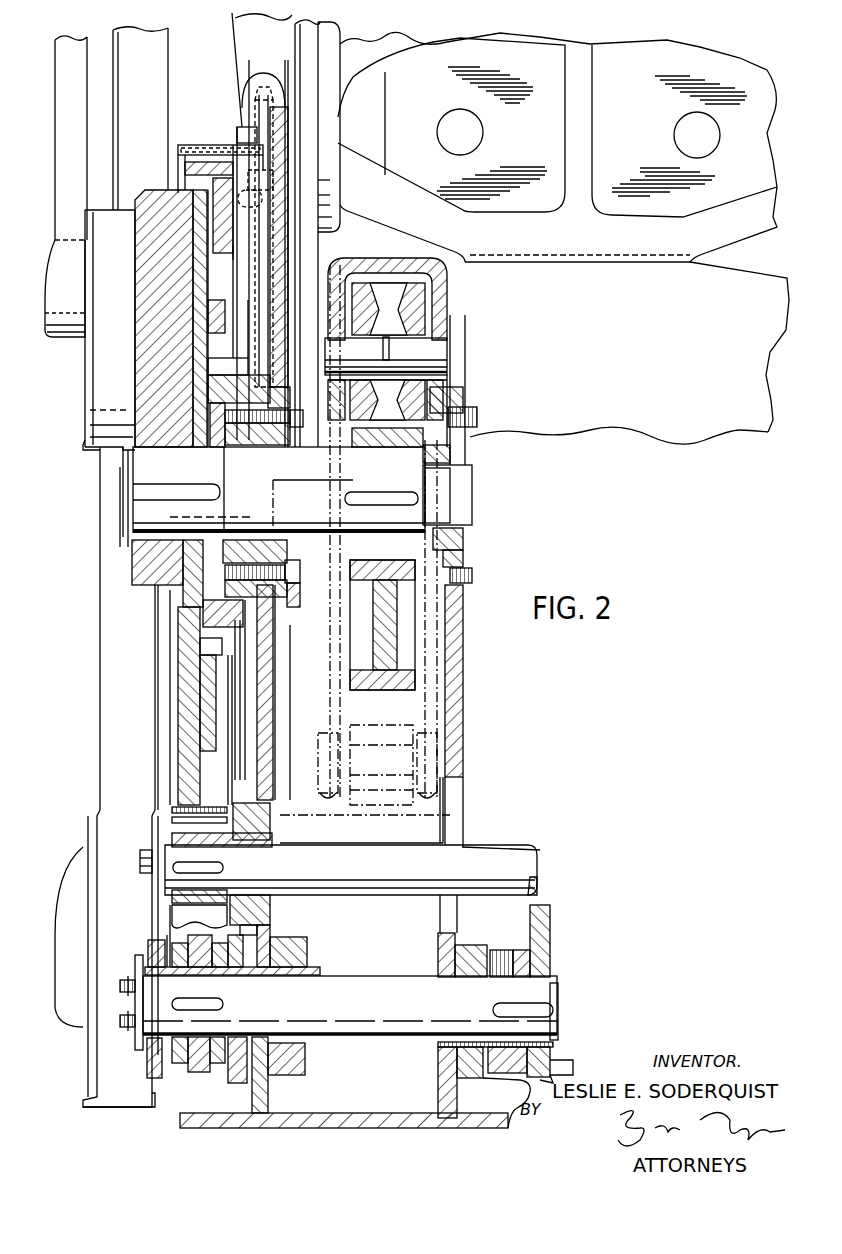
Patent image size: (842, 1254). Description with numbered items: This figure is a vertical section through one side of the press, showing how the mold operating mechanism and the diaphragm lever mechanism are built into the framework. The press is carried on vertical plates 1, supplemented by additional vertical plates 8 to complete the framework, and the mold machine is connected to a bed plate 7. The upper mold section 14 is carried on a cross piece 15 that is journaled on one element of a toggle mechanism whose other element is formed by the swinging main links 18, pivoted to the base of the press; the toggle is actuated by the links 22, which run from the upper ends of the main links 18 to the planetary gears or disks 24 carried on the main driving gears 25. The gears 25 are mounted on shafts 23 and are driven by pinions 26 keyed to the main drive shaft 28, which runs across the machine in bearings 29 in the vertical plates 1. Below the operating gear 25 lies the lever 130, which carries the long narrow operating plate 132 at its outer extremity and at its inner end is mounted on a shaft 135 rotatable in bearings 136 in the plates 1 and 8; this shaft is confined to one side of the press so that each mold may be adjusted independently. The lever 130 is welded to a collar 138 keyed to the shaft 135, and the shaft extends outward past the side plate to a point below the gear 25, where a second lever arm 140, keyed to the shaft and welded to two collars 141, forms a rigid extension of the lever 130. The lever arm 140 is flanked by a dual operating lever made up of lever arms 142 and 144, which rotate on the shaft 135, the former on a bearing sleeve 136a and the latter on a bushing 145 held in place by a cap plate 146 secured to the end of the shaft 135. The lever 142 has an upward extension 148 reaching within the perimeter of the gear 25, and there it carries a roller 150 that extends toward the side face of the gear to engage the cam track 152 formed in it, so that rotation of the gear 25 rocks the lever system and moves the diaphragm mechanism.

The vertical plates 1 is at (266, 1098).
The bed plate 7 is at (339, 1128).
The additional vertical plates 8 is at (437, 1096).
The upper mold section 14 is at (703, 433).
The cross piece 15 is at (384, 208).
The swinging main links 18 is at (108, 604).
The links 22 is at (66, 215).
The shafts 23 is at (463, 508).
The planetary gears or disks 24 is at (97, 395).
The main driving gears 25 is at (188, 748).
The pinions 26 is at (172, 841).
The main drive shaft 28 is at (524, 864).
The bearings 29 is at (268, 896).
The lever 130 is at (553, 944).
The operating plate 132 is at (573, 1066).
The shaft 135 is at (340, 984).
The bearings 136 is at (305, 1043).
The bearing sleeve 136a is at (249, 968).
The collar 138 is at (497, 955).
The second lever arm 140 is at (195, 1072).
The collars 141 is at (174, 1064).
The lever arm 142 is at (237, 1083).
The lever arm 144 is at (155, 1070).
The bushing 145 is at (154, 1066).
The cap plate 146 is at (140, 998).
The upward extension 148 is at (240, 712).
The roller 150 is at (228, 667).
The cam track 152 is at (205, 677).